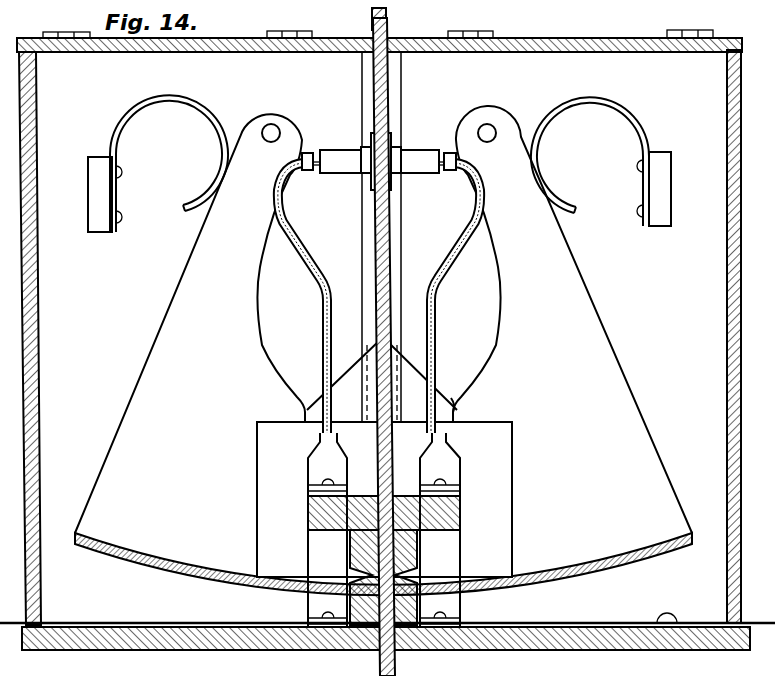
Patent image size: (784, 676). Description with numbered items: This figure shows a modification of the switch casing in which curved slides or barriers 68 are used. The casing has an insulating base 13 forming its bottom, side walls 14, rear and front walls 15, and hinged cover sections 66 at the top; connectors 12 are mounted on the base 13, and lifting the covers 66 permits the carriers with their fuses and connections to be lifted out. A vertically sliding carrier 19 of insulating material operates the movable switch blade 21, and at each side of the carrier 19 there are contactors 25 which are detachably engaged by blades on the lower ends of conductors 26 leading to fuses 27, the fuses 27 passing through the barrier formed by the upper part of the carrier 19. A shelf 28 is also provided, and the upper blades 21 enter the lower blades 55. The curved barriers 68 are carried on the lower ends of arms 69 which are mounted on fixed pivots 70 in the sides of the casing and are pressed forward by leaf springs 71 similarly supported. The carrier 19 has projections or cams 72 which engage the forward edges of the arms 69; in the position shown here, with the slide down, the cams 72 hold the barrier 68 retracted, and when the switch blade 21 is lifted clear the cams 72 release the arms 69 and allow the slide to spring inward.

The connector 12 is at (673, 632).
The insulating base 13 is at (608, 640).
The side wall 14 is at (728, 316).
The rear and front wall 15 is at (660, 282).
The carrier 19 is at (388, 258).
The switch blade 21 is at (403, 577).
The contactor 25 is at (450, 470).
The conductor 26 is at (443, 326).
The fuse 27 is at (417, 168).
The shelf 28 is at (462, 505).
The lower blade 55 is at (452, 601).
The cover section 66 is at (603, 50).
The curved slide or barrier 68 is at (570, 572).
The arm 69 is at (637, 422).
The fixed pivot 70 is at (487, 124).
The leaf spring 71 is at (548, 124).
The projection or cam 72 is at (450, 410).